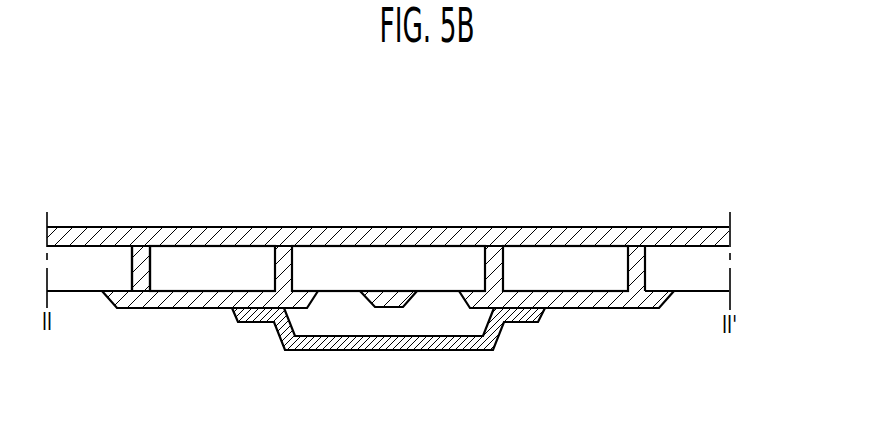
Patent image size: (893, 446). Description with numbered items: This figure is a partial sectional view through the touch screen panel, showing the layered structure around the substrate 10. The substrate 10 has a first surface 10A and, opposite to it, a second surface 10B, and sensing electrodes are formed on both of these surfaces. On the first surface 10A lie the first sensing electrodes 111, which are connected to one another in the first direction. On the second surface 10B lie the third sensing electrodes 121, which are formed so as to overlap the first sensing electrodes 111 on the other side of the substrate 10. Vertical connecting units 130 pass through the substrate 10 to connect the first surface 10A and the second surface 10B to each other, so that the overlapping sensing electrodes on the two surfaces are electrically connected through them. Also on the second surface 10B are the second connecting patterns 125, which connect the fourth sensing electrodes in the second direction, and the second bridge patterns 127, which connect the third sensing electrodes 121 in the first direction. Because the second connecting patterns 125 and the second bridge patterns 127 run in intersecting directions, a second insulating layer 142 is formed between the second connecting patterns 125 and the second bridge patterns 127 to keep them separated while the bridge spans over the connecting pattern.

The substrate 10 is at (718, 265).
The first surface 10A is at (716, 240).
The second surface 10B is at (713, 292).
The first sensing electrodes 111 is at (533, 226).
The third sensing electrodes 121 is at (580, 303).
The second connecting patterns 125 is at (386, 300).
The second bridge patterns 127 is at (470, 352).
The vertical connecting units 130 is at (145, 273).
The second insulating layer 142 is at (333, 313).